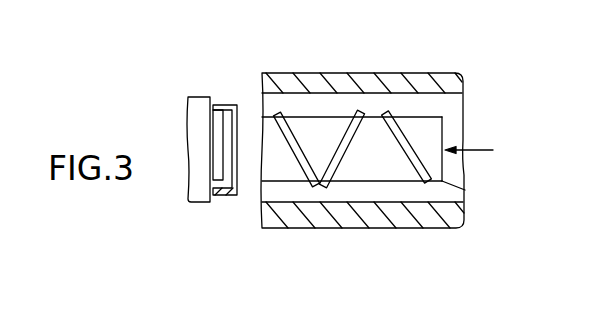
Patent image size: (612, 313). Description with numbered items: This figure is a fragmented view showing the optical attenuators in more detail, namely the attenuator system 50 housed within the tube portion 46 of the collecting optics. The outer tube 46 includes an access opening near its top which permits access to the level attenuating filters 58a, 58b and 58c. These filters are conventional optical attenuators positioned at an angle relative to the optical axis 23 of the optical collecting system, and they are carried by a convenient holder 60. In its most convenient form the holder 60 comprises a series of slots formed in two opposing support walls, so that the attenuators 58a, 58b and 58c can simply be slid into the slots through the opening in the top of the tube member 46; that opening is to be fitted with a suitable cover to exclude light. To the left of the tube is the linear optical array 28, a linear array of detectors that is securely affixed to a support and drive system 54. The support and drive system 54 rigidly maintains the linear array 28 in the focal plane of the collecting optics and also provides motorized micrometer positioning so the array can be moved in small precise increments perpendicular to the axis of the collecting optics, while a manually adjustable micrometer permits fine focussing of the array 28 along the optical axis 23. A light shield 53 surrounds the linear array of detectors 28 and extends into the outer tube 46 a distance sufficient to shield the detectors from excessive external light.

The optical axis 23 is at (470, 149).
The linear optical array 28 is at (218, 124).
The outer tube 46 is at (364, 74).
The attenuator system 50 is at (465, 190).
The light shield 53 is at (229, 105).
The support and drive system 54 is at (188, 112).
The level attenuating filter 58a is at (302, 170).
The level attenuating filter 58b is at (339, 130).
The level attenuating filter 58c is at (423, 178).
The holder 60 is at (347, 183).